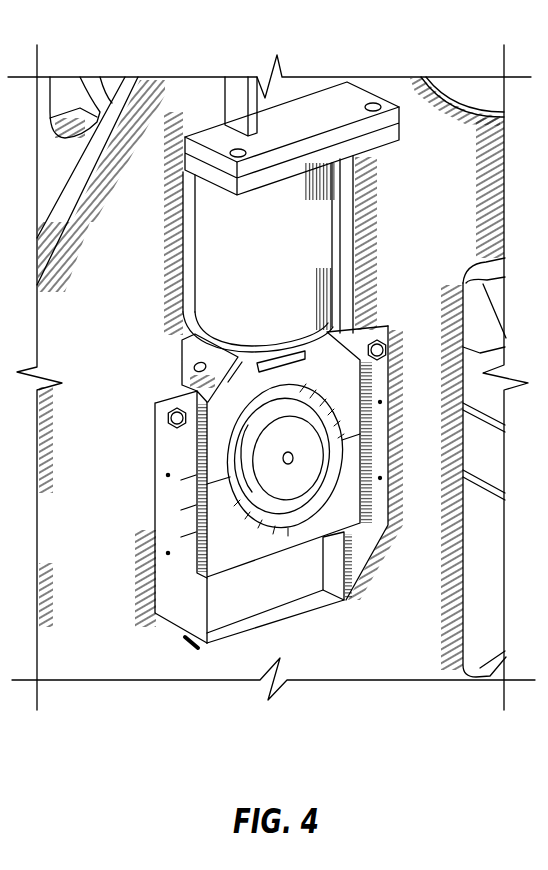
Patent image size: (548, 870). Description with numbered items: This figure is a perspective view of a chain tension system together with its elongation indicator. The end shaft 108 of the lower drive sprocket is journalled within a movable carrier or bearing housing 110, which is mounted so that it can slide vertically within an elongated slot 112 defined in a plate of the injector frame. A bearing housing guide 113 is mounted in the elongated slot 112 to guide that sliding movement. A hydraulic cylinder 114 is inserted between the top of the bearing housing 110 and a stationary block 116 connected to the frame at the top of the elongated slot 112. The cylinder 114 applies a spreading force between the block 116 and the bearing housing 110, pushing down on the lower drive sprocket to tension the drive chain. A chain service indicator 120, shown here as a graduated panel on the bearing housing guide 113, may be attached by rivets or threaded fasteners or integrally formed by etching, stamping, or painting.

The end shaft 108 is at (293, 458).
The bearing housing 110 is at (345, 398).
The elongated slot 112 is at (346, 230).
The bearing housing guide 113 is at (175, 455).
The hydraulic cylinder 114 is at (202, 255).
The block 116 is at (352, 100).
The chain service indicator 120 is at (172, 525).